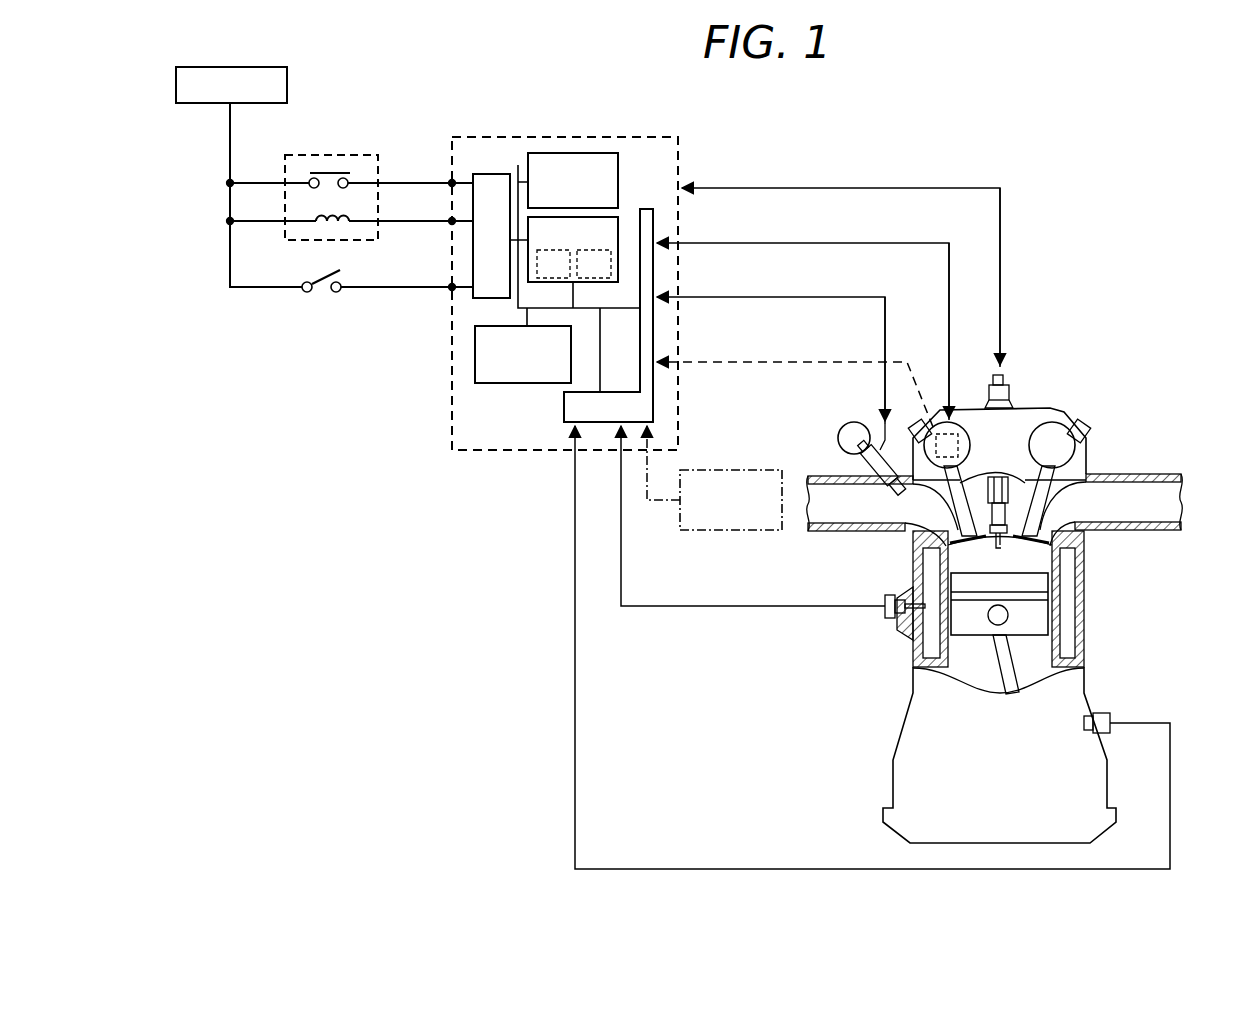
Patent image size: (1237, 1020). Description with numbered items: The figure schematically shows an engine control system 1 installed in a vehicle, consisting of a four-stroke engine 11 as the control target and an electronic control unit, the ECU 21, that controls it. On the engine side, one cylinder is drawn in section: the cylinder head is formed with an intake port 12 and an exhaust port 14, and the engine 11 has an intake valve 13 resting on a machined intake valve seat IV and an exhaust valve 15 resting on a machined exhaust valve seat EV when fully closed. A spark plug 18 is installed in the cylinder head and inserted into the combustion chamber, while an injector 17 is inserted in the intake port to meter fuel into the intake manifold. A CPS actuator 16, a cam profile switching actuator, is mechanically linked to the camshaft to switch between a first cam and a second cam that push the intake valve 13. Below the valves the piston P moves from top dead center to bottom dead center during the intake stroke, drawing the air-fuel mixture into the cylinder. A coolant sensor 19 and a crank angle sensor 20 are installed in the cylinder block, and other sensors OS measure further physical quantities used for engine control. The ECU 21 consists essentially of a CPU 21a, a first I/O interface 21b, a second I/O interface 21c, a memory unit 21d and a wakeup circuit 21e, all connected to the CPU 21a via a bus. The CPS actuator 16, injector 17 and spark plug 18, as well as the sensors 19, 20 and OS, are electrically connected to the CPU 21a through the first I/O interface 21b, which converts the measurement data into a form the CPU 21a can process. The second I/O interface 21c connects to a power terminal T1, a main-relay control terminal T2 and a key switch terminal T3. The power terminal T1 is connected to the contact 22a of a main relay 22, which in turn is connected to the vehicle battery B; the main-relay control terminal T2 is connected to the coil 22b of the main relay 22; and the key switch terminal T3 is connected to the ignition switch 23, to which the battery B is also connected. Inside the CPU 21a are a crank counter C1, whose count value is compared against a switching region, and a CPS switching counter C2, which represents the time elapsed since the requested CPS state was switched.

The engine control system 1 is at (1026, 170).
The engine 11 is at (1057, 410).
The intake port 12 is at (930, 512).
The intake valve 13 is at (940, 562).
The exhaust port 14 is at (1068, 524).
The exhaust valve 15 is at (1052, 569).
The CPS actuator 16 is at (952, 421).
The injector 17 is at (862, 471).
The spark plug 18 is at (1003, 520).
The coolant sensor 19 is at (888, 623).
The crank angle sensor 20 is at (1106, 712).
The ECU 21 is at (583, 137).
The CPU 21a is at (629, 214).
The first I/O interface 21b is at (563, 405).
The second I/O interface 21c is at (485, 174).
The memory unit 21d is at (490, 383).
The wakeup circuit 21e is at (605, 153).
The main relay 22 is at (313, 220).
The contact 22a is at (338, 172).
The coil 22b is at (324, 228).
The ignition switch 23 is at (330, 299).
The battery B is at (287, 74).
The power terminal T1 is at (450, 182).
The main-relay control terminal T2 is at (450, 222).
The key switch terminal T3 is at (450, 288).
The crank counter C1 is at (553, 264).
The CPS switching counter C2 is at (594, 264).
The piston P is at (1035, 618).
The intake valve seat IV is at (912, 541).
The exhaust valve seat EV is at (1090, 544).
The other sensors OS is at (728, 532).